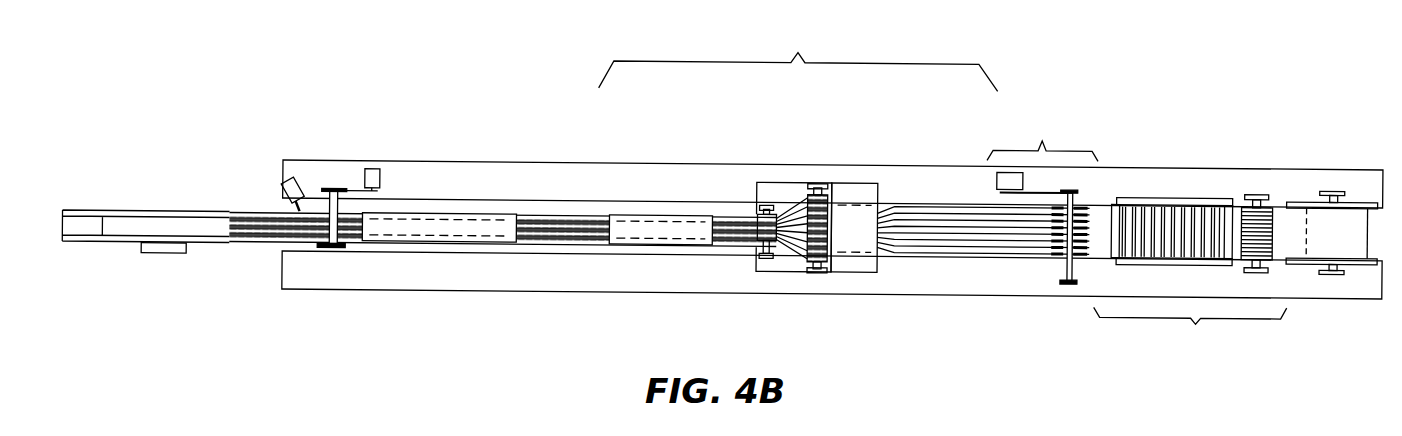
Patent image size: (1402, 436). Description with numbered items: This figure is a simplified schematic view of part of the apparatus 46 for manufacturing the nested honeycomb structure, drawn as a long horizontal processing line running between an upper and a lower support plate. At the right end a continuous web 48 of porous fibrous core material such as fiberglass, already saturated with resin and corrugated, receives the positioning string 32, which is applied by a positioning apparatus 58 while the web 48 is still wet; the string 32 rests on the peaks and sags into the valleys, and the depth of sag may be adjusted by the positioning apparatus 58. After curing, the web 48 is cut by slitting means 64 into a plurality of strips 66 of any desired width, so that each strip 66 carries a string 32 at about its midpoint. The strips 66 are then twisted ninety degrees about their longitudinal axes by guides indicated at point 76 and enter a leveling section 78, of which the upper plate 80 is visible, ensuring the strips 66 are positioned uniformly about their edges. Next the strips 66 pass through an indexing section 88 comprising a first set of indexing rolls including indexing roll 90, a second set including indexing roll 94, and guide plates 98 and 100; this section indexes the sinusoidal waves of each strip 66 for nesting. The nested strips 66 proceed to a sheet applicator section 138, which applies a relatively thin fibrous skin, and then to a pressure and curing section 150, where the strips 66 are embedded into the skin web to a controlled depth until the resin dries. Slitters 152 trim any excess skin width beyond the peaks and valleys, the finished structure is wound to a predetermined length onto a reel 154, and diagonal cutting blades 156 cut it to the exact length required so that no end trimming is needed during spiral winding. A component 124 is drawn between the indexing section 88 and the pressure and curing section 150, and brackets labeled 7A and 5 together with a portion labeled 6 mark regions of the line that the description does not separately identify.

The sheet applicator section 138 is at (544, 149).
The apparatus for manufacturing the nested honeycomb structure 46 is at (1032, 300).
The region shown in FIG. 7A is at (799, 60).
The reel 154 is at (162, 255).
The strips 66 is at (541, 213).
The diagonal cutting blades 156 is at (298, 212).
The slitters 152 is at (340, 211).
The pressure and curing section 150 is at (433, 211).
The connector 124 is at (661, 211).
The indexing section 88 is at (794, 173).
The indexing roll 94 is at (757, 242).
The guide plate 100 is at (790, 254).
The guide plate 98 is at (793, 194).
The indexing roll 90 is at (836, 254).
The upper plate 80 is at (862, 180).
The leveling section 78 is at (862, 144).
The guides 76 is at (912, 201).
The guide assembly 6 is at (1043, 152).
The slitting means 64 is at (1084, 203).
The positioning apparatus 58 is at (1174, 175).
The positioning string 32 is at (1277, 198).
The continuous web 48 is at (1358, 255).
The region shown in FIG. 5 is at (1189, 332).